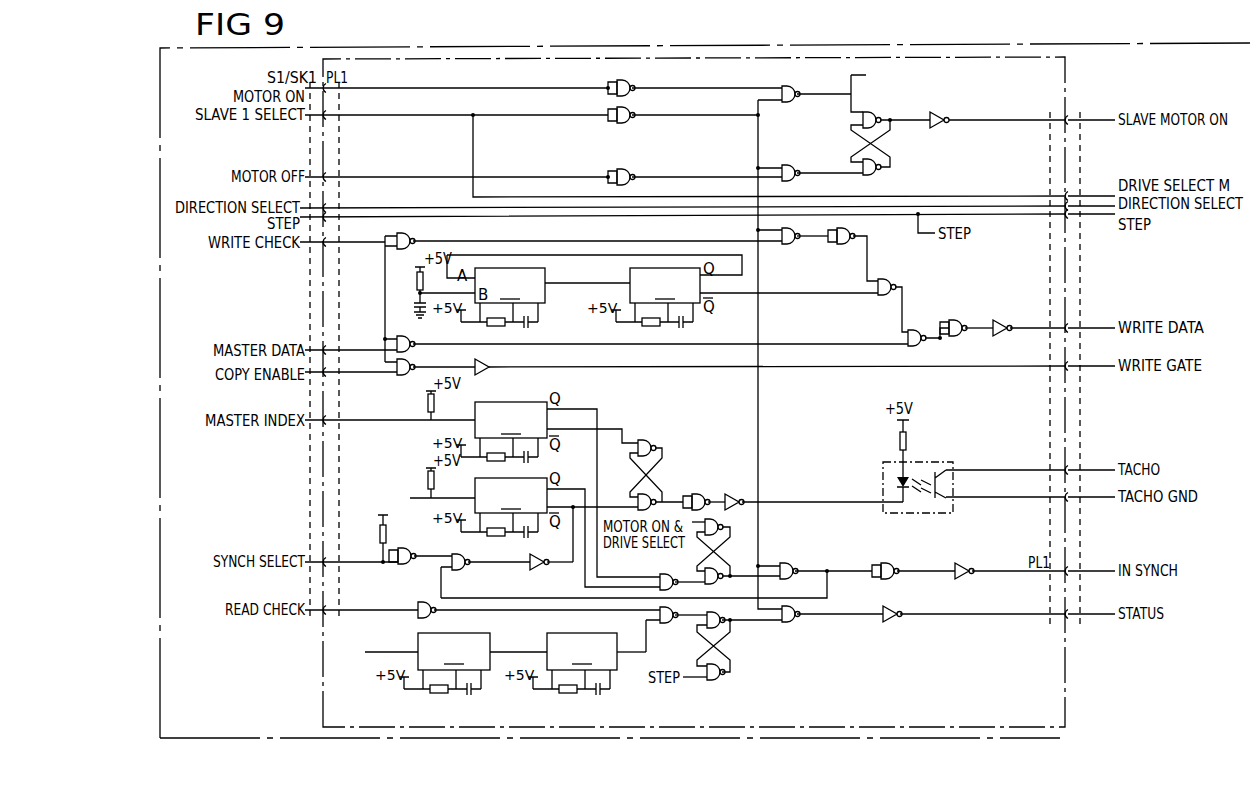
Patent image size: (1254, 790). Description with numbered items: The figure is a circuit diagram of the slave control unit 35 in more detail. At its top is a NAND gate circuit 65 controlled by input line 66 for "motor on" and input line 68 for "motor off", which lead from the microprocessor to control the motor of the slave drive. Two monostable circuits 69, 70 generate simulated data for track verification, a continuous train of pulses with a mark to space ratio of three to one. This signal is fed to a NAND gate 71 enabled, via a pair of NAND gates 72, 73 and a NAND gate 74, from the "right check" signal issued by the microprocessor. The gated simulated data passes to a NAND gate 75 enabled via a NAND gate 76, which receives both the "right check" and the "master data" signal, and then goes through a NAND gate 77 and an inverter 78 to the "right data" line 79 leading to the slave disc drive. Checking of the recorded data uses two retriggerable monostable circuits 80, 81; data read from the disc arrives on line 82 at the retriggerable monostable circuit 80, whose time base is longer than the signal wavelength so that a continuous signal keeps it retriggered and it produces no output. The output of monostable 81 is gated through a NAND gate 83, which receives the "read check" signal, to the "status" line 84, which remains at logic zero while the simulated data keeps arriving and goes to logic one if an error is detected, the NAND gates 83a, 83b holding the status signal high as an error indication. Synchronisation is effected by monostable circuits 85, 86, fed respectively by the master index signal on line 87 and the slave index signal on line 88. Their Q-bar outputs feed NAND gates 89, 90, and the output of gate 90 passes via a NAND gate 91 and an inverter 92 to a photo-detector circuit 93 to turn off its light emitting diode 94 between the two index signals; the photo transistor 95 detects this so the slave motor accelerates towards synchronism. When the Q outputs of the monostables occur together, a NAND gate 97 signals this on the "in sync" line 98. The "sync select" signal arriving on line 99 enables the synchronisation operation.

The slave control unit 35 is at (485, 47).
The NAND gate circuit 65 is at (718, 80).
The input line 66 is at (428, 86).
The input line 68 is at (411, 176).
The monostable circuit 69 is at (488, 298).
The monostable circuit 70 is at (643, 298).
The NAND gate 71 is at (893, 281).
The NAND gate 72 is at (856, 238).
The NAND gate 73 is at (785, 246).
The NAND gate 74 is at (401, 233).
The NAND gate 75 is at (906, 337).
The NAND gate 76 is at (412, 341).
The NAND gate 77 is at (955, 320).
The inverter 78 is at (1000, 320).
The "right data" line 79 is at (1086, 327).
The retriggerable monostable circuit 80 is at (432, 664).
The retriggerable monostable circuit 81 is at (560, 664).
The line 82 is at (372, 655).
The NAND gate 83 is at (657, 617).
The NAND gate 83a is at (723, 613).
The NAND gate 83b is at (723, 675).
The "status" line 84 is at (1092, 613).
The monostable circuit 85 is at (489, 432).
The monostable circuit 86 is at (489, 508).
The line 87 is at (357, 420).
The line 88 is at (412, 498).
The NAND gate 89 is at (640, 440).
The NAND gate 90 is at (636, 499).
The NAND gate 91 is at (694, 492).
The inverter 92 is at (732, 492).
The photo-detector circuit 93 is at (883, 470).
The light emitting diode 94 is at (900, 489).
The photo transistor 95 is at (955, 485).
The NAND gate 97 is at (657, 578).
The "in sync" line 98 is at (1092, 570).
The line 99 is at (365, 561).